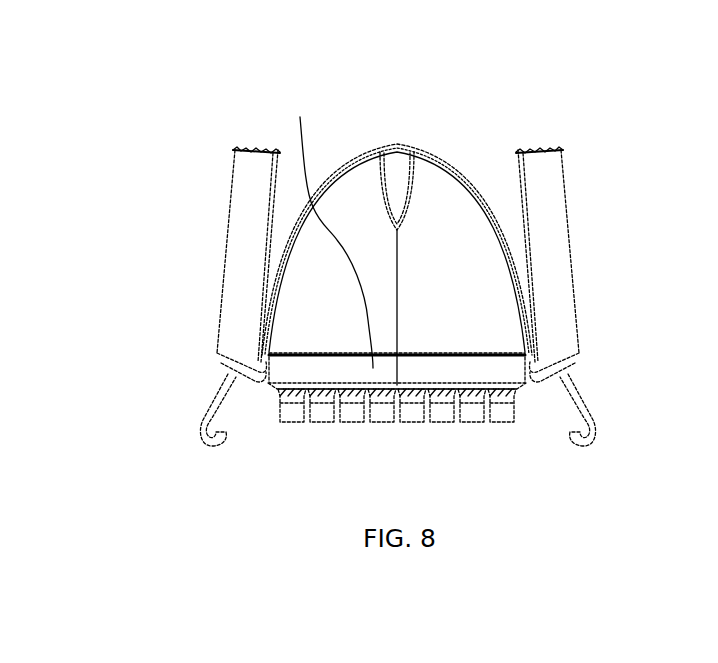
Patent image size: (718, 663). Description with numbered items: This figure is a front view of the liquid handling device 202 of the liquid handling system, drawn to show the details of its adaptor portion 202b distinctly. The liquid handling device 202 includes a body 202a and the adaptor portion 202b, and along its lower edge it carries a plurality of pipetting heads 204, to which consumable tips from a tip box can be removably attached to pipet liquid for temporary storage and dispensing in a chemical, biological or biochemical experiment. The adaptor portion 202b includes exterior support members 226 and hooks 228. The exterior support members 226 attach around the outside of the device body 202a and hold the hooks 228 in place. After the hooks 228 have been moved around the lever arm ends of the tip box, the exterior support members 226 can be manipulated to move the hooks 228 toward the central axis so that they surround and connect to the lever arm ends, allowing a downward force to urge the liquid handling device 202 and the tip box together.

The liquid handling device 202 is at (206, 99).
The body 202a is at (327, 226).
The adaptor portion 202b is at (175, 259).
The pipetting heads 204 is at (347, 416).
The exterior support members 226 is at (212, 231).
The hooks 228 is at (201, 384).